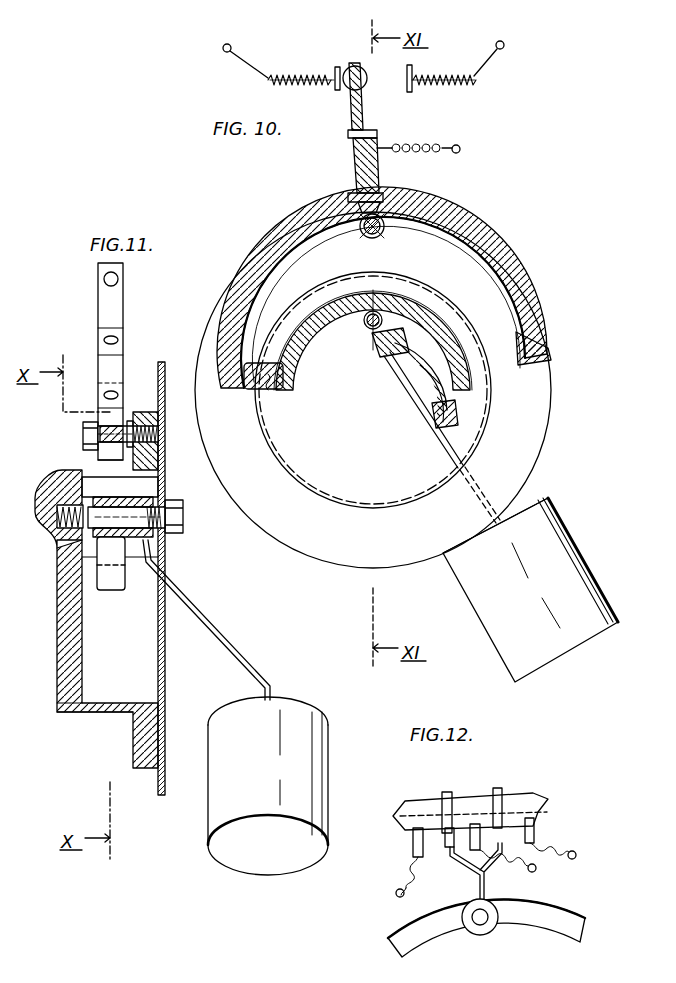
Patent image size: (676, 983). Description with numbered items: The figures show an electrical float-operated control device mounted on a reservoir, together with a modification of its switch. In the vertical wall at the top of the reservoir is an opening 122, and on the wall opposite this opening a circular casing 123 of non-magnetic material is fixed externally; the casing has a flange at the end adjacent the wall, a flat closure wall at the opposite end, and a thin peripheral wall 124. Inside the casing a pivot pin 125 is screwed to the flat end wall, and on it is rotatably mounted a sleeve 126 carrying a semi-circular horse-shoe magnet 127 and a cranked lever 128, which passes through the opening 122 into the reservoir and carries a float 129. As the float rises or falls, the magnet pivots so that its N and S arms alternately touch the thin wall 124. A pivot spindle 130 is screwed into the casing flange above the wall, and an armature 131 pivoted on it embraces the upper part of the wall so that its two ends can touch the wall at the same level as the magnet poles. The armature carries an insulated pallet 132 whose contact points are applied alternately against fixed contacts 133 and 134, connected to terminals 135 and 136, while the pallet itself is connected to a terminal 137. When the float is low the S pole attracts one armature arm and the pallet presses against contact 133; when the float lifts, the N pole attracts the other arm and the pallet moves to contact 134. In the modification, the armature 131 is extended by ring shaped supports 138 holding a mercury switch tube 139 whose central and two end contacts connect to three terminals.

In FIG. 11, the opening 122 is at (165, 636).
In FIG. 10, the circular casing 123 is at (280, 523).
In FIG. 11, the circular casing 123 is at (53, 693).
In FIG. 10, the peripheral wall 124 is at (337, 500).
In FIG. 11, the peripheral wall 124 is at (97, 708).
In FIG. 10, the pivot pin 125 is at (383, 319).
In FIG. 11, the pivot pin 125 is at (133, 515).
In FIG. 11, the sleeve 126 is at (83, 501).
In FIG. 10, the horse-shoe magnet 127 is at (334, 316).
In FIG. 11, the horse-shoe magnet 127 is at (110, 583).
In FIG. 10, the lever 128 is at (456, 463).
In FIG. 11, the lever 128 is at (210, 627).
In FIG. 10, the float 129 is at (567, 594).
In FIG. 11, the float 129 is at (252, 707).
In FIG. 10, the pivot spindle 130 is at (362, 220).
In FIG. 11, the pivot spindle 130 is at (117, 430).
In FIG. 10, the armature 131 is at (298, 263).
In FIG. 11, the armature 131 is at (107, 460).
In FIG. 12, the armature 131 is at (527, 910).
In FIG. 10, the pallet 132 is at (365, 109).
In FIG. 11, the pallet 132 is at (115, 372).
In FIG. 10, the fixed contact 133 is at (338, 70).
In FIG. 10, the fixed contact 134 is at (412, 68).
In FIG. 10, the terminal 135 is at (263, 64).
In FIG. 10, the terminal 136 is at (476, 63).
In FIG. 10, the terminal 137 is at (436, 149).
In FIG. 12, the ring shaped supports 138 is at (495, 787).
In FIG. 12, the switch tube 139 is at (428, 810).